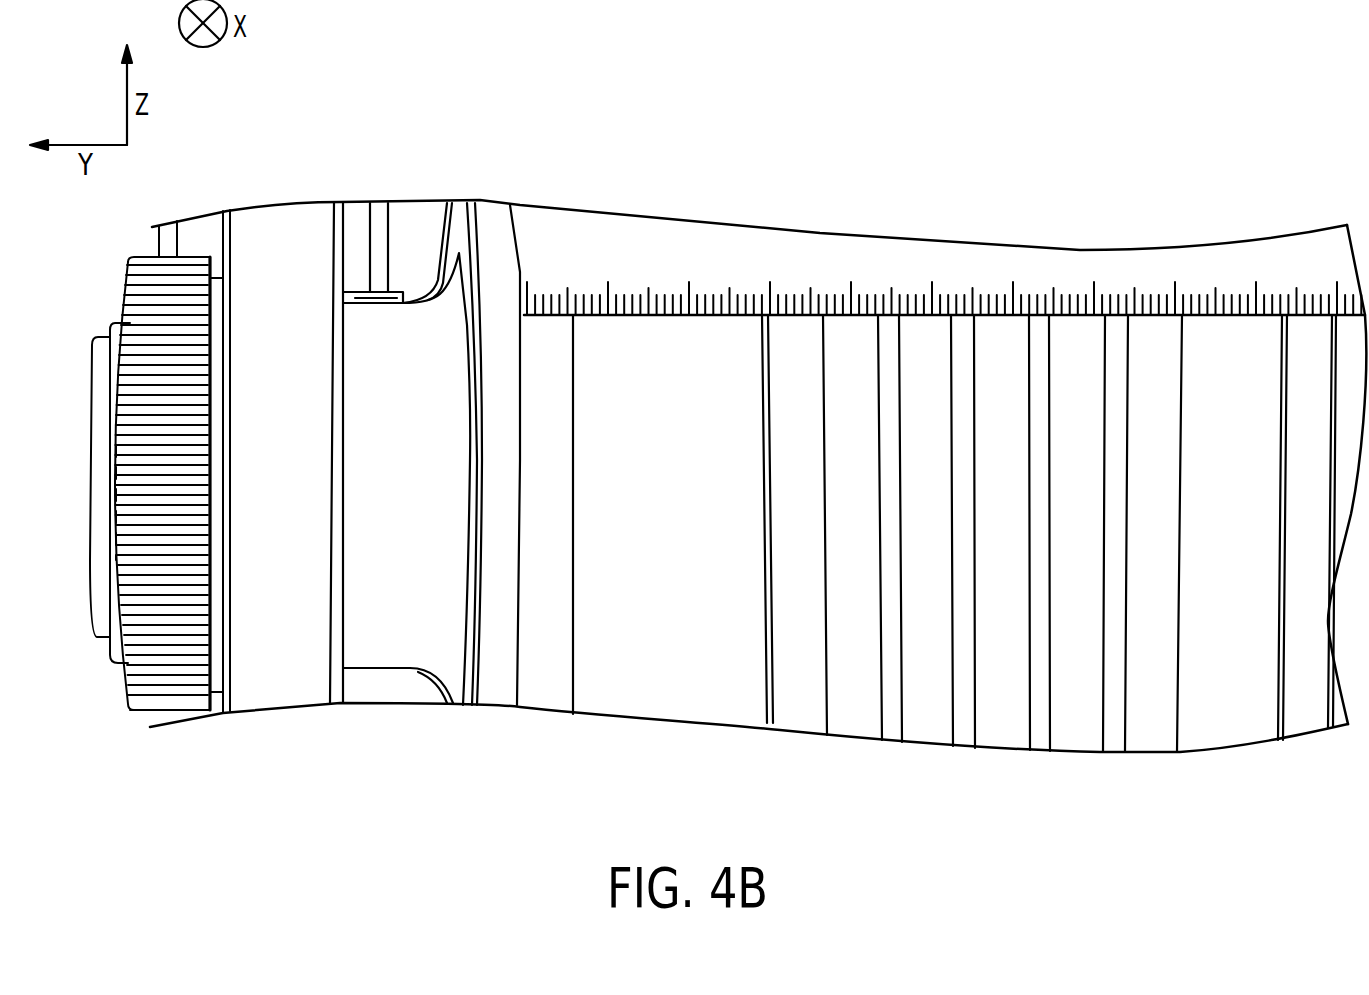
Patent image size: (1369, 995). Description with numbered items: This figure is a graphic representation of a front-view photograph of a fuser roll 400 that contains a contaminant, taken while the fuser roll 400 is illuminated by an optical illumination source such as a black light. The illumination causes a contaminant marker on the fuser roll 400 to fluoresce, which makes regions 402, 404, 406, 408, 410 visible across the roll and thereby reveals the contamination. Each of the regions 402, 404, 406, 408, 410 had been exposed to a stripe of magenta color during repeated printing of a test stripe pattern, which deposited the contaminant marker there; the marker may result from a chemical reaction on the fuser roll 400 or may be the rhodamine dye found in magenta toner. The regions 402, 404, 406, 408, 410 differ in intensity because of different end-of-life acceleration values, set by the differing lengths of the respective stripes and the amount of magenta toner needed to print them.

The fuser roll 400 is at (1257, 148).
The region 402 is at (1177, 756).
The region 404 is at (1103, 756).
The region 406 is at (1030, 755).
The region 408 is at (823, 744).
The region 410 is at (773, 723).